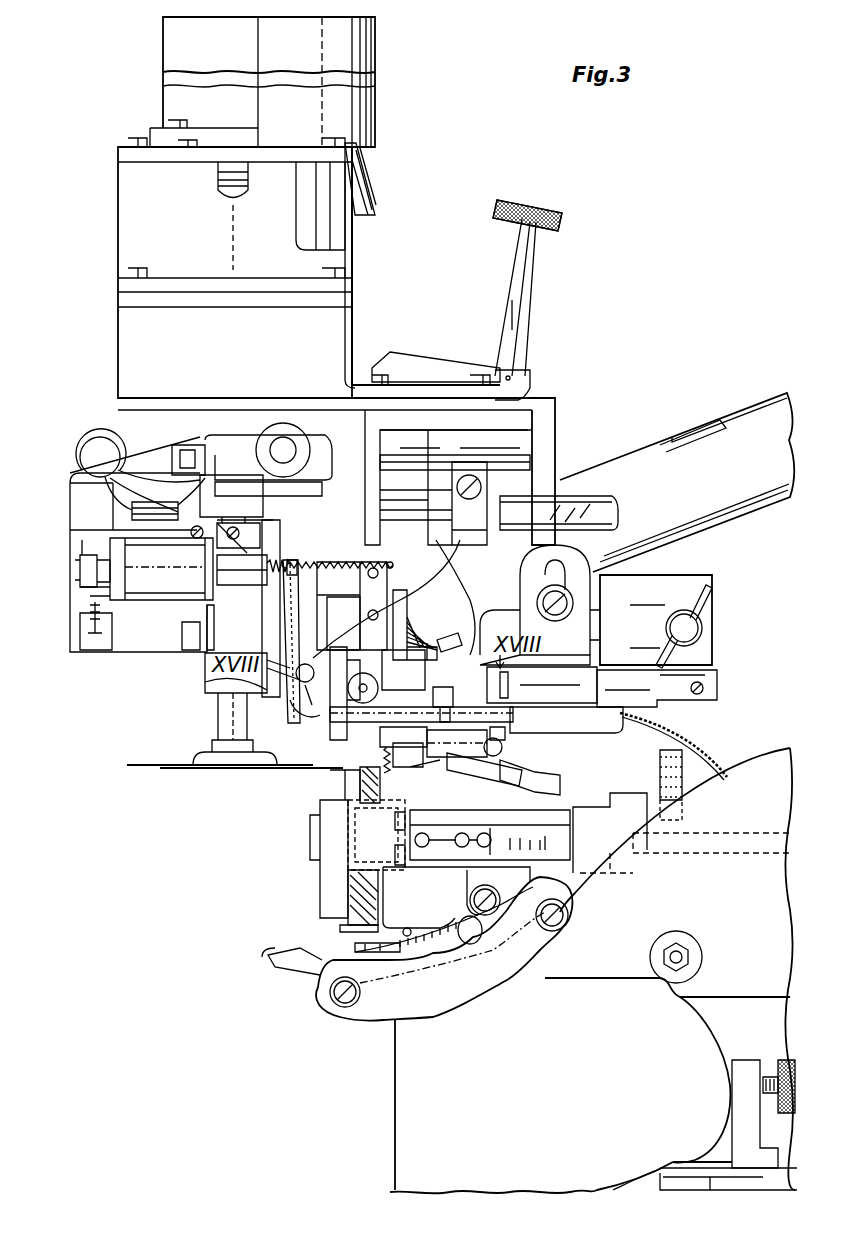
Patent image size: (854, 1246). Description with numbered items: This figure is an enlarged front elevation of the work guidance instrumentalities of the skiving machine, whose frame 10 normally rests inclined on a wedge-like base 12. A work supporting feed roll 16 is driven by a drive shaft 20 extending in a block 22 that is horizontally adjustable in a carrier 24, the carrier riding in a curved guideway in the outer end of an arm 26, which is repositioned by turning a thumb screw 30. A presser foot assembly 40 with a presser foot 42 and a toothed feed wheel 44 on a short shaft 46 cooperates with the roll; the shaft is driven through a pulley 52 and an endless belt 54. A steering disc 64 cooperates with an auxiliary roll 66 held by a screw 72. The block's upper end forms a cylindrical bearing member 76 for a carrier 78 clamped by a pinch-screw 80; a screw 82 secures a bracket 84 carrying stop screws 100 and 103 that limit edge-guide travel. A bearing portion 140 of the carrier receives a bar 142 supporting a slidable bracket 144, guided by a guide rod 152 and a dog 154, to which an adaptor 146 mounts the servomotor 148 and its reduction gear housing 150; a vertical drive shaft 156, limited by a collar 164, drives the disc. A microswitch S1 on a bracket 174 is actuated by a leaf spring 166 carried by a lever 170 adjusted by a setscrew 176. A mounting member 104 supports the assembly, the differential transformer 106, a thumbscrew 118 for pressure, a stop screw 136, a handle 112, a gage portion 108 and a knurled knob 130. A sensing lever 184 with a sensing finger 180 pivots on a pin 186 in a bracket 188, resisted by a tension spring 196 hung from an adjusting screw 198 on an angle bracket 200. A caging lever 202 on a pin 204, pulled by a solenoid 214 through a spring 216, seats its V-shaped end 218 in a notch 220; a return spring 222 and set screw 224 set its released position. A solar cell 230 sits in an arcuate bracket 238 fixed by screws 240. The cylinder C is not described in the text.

The servomotor 148 is at (180, 84).
The reduction gear housing 150 is at (118, 228).
The adaptor 146 is at (345, 325).
The bracket 144 is at (553, 425).
The cylinder C is at (283, 440).
The guide rod 152 is at (455, 451).
The dog 154 is at (470, 460).
The bar 142 is at (499, 542).
The bearing portion 140 is at (444, 572).
The cylindrical bearing member 76 is at (658, 568).
The carrier 78 is at (712, 623).
The pinch-screw 80 is at (700, 615).
The screw 82 is at (568, 600).
The bracket 84 is at (580, 625).
The stop screw 100 is at (520, 700).
The stop screw 103 is at (565, 703).
The endless belt 54 is at (675, 758).
The pulley 52 is at (695, 768).
The arm 26 is at (670, 969).
The drive shaft 20 is at (645, 855).
The thumb screw 30 is at (704, 955).
The frame 10 is at (405, 1073).
The wedge-like base 12 is at (680, 1190).
The feed roll 16 is at (355, 930).
The carrier 24 is at (448, 895).
The block 22 is at (490, 823).
The screw 72 is at (312, 845).
The auxiliary work supporting roll 66 is at (330, 875).
The arcuate bracket 238 is at (340, 895).
The screws 240 is at (355, 920).
The solar cell 230 is at (330, 812).
The presser foot 42 is at (335, 772).
The feed wheel 44 is at (340, 790).
The steering disc 64 is at (142, 763).
The presser foot assembly 40 is at (212, 740).
The vertical drive shaft 156 is at (222, 715).
The set screw 224 is at (212, 690).
The work detector microswitch S1 is at (78, 498).
The bracket 174 is at (83, 555).
The leaf spring 166 is at (78, 562).
The lever 170 is at (80, 588).
The setscrew 176 is at (85, 630).
The solenoid 214 is at (178, 598).
The collar 164 is at (255, 520).
The caging lever 202 is at (275, 565).
The spring 216 is at (258, 595).
The angle bracket 200 is at (259, 608).
The pin 204 is at (213, 627).
The return spring 222 is at (337, 552).
The V-shaped end 218 is at (310, 728).
The notch 220 is at (303, 695).
The adjusting screw 198 is at (352, 606).
The tension spring 196 is at (347, 623).
The gage portion 108 is at (360, 681).
The differential transformer 106 is at (414, 576).
The lever 184 is at (420, 600).
The mounting member 104 is at (420, 660).
The knurled knob 130 is at (378, 690).
The stop screw 136 is at (460, 690).
The pin 186 is at (375, 720).
The bracket 188 is at (375, 742).
The thumbscrew 118 is at (510, 748).
The presser foot lifting handle 112 is at (447, 768).
The shaft 46 is at (405, 768).
The sensing finger 180 is at (385, 777).